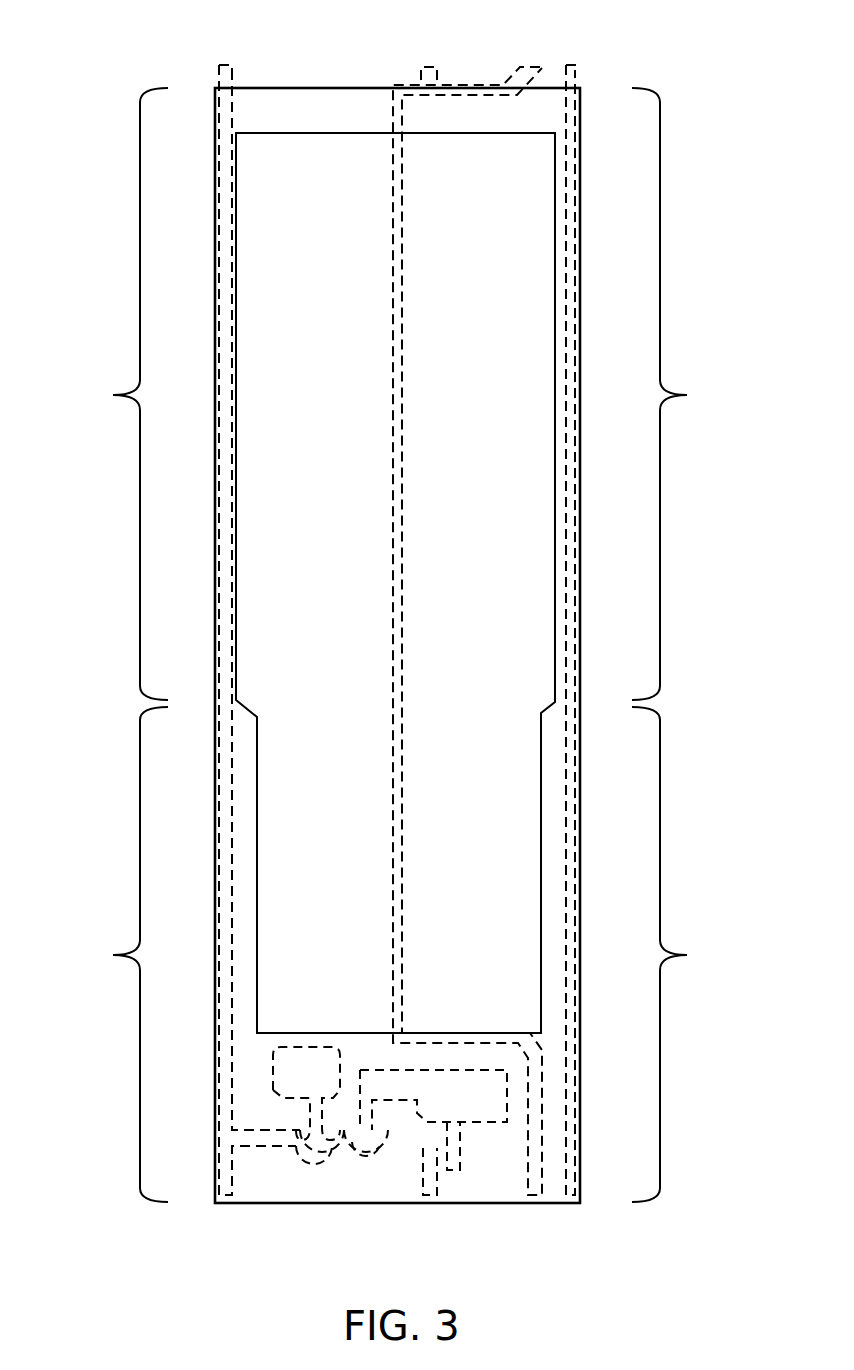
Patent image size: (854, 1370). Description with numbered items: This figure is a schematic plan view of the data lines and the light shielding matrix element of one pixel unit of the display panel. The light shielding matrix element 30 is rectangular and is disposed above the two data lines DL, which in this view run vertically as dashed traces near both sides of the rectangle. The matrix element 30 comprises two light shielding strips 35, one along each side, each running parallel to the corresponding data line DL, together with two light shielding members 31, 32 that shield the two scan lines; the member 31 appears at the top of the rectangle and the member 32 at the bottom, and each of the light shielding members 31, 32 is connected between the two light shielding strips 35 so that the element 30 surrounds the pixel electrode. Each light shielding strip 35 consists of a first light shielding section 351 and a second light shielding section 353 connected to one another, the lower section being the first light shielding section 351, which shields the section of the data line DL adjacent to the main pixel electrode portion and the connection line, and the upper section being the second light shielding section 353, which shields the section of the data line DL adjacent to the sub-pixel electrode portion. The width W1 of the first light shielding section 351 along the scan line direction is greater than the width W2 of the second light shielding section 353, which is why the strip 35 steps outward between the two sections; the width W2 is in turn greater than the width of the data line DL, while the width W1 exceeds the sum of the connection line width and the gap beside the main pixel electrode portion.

The light shielding matrix element 30 is at (586, 106).
The light shielding member 31 is at (382, 92).
The light shielding member 32 is at (357, 1196).
The light shielding strip 35 is at (213, 303).
The first light shielding section 351 is at (402, 954).
The second light shielding section 353 is at (401, 394).
The data line DL is at (226, 1078).
The width of the first light shielding section W1 is at (285, 777).
The width of the second light shielding section W2 is at (267, 584).